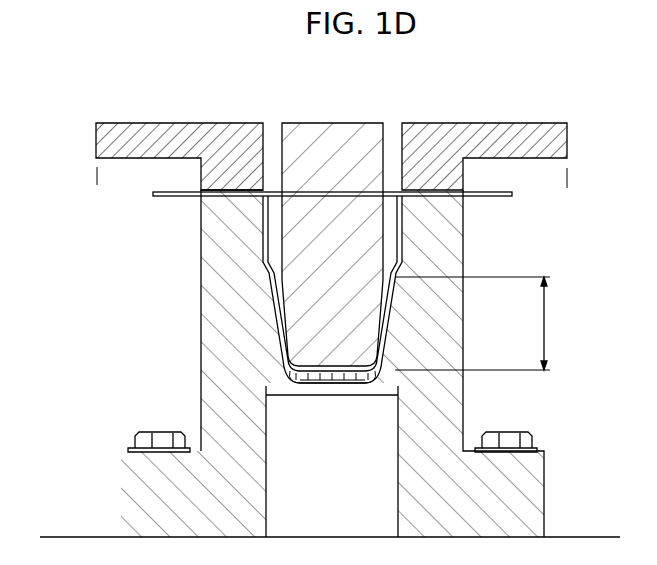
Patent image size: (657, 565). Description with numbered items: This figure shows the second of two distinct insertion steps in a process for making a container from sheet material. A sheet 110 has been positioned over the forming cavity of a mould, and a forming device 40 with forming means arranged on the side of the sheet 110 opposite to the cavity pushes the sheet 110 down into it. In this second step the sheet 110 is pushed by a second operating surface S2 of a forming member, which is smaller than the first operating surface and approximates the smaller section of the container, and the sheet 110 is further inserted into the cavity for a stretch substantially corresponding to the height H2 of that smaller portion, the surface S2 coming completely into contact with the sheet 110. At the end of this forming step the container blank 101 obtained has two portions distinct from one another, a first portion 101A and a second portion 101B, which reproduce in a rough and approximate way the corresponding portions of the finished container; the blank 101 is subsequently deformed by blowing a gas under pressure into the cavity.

The forming device 40 is at (539, 162).
The sheet 110 is at (490, 197).
The container blank 101 is at (312, 287).
The first portion of the container blank 101A is at (262, 236).
The second portion of the container blank 101B is at (277, 334).
The second operating surface S2 is at (322, 381).
The height of the second portion H2 is at (487, 323).